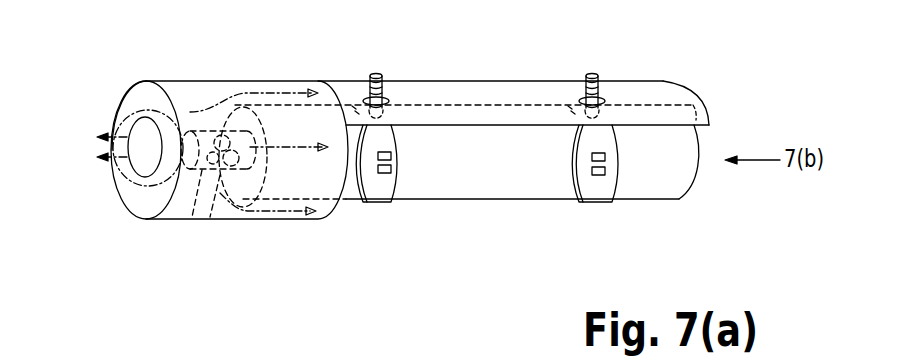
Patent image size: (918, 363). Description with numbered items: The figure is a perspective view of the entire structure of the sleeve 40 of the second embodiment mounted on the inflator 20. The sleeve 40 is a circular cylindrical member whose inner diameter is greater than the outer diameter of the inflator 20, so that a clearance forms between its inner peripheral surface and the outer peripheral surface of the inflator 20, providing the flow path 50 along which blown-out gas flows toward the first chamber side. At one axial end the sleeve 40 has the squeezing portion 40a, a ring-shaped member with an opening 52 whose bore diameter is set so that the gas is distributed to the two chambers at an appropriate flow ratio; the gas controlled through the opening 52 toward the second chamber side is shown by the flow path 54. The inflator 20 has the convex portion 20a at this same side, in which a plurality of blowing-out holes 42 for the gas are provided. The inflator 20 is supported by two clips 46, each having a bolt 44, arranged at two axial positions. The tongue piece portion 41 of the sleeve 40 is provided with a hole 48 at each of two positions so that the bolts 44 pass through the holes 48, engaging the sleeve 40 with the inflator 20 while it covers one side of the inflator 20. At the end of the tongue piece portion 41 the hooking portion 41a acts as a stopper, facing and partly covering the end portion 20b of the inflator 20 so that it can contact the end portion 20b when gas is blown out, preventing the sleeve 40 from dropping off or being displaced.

The inflator 20 is at (485, 178).
The convex portion 20a is at (183, 222).
The end portion 20b is at (696, 188).
The sleeve 40 is at (230, 78).
The squeezing portion 40a is at (140, 98).
The tongue piece portion 41 is at (508, 92).
The hooking portion 41a is at (708, 99).
The blowing-out holes 42 is at (216, 222).
The bolt 44 is at (375, 74).
The clip 46 is at (368, 203).
The hole 48 is at (386, 98).
The flow path 50 is at (285, 80).
The opening 52 is at (135, 131).
The flow path 54 is at (112, 181).